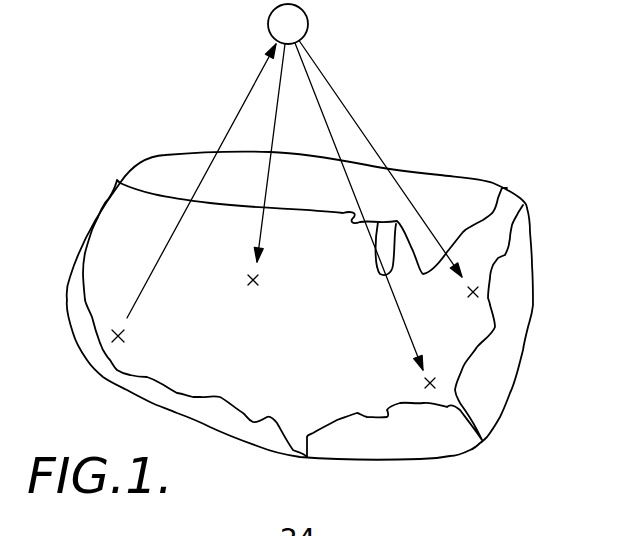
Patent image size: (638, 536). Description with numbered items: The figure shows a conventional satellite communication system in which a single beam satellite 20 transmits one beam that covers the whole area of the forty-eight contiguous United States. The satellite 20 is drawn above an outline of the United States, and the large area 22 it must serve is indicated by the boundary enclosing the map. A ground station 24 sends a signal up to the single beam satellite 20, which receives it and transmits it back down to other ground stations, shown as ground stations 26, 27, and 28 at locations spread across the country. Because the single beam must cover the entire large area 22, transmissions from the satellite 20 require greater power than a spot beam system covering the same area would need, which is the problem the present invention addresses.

The single beam satellite 20 is at (306, 17).
The large area 22 is at (420, 460).
The ground station 24 is at (128, 337).
The ground station 26 is at (262, 281).
The ground station 27 is at (420, 383).
The ground station 28 is at (461, 292).